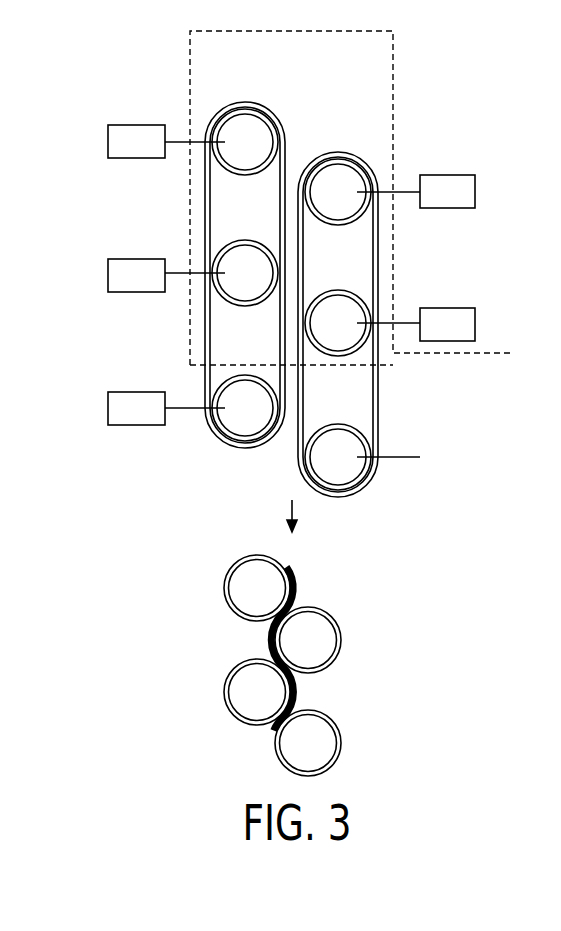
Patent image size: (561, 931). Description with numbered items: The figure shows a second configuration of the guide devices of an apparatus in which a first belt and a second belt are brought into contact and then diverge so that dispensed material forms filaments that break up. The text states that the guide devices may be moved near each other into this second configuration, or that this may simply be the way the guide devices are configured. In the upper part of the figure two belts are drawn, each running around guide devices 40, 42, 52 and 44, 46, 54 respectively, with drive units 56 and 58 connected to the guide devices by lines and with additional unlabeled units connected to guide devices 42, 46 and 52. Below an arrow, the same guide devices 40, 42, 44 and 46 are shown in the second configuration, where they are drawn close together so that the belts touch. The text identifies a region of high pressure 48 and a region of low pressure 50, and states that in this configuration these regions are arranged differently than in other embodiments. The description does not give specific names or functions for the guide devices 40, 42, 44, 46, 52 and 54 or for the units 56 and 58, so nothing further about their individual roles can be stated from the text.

The first roller 40 is at (246, 100).
The second roller 42 is at (212, 271).
The third roller 44 is at (370, 188).
The fourth roller 46 is at (372, 322).
The region of high pressure 48 is at (291, 152).
The region of low pressure 50 is at (380, 393).
The first belt tensioning roller 52 is at (208, 405).
The second belt tensioning roller 54 is at (378, 452).
The drive unit 56 is at (465, 192).
The drive unit 58 is at (118, 142).